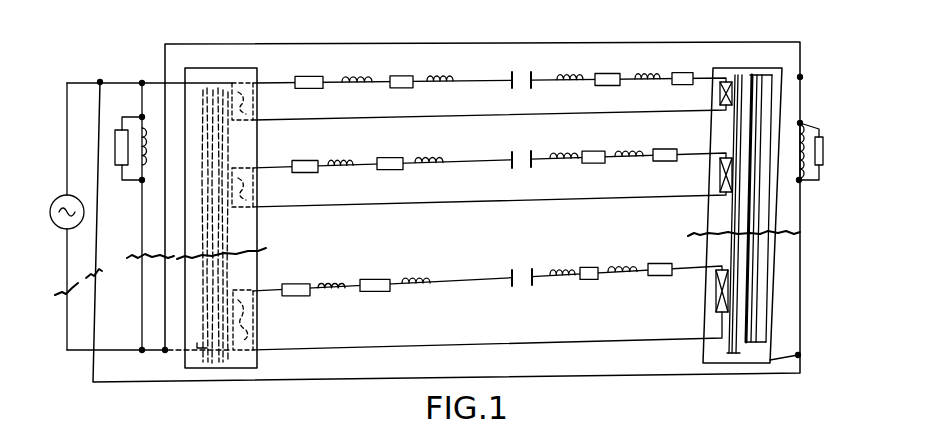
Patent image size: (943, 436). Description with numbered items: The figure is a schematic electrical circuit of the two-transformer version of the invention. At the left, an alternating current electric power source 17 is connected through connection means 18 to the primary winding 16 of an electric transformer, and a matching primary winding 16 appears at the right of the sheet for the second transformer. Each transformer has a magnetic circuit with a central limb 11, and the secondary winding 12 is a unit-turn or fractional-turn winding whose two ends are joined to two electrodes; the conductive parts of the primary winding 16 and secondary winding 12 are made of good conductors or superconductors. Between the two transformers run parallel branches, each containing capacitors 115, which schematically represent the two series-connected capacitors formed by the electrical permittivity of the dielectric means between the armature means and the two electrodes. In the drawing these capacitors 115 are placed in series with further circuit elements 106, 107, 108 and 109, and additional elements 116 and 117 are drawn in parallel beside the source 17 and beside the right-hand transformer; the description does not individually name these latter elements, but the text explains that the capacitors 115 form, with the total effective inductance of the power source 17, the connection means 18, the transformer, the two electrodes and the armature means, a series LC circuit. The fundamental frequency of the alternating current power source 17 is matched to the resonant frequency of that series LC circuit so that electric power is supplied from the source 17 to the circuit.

The central limb 11 is at (208, 368).
The secondary winding 12 is at (240, 328).
The primary winding 16 is at (213, 98).
The alternating current electric power source 17 is at (52, 225).
The connection means 18 is at (80, 82).
The resistor 106 is at (305, 84).
The inductor 107 is at (355, 82).
The resistor 108 is at (402, 80).
The inductor 109 is at (438, 81).
The capacitors 115 is at (515, 72).
The inductor 116 is at (148, 128).
The resistor 117 is at (115, 153).